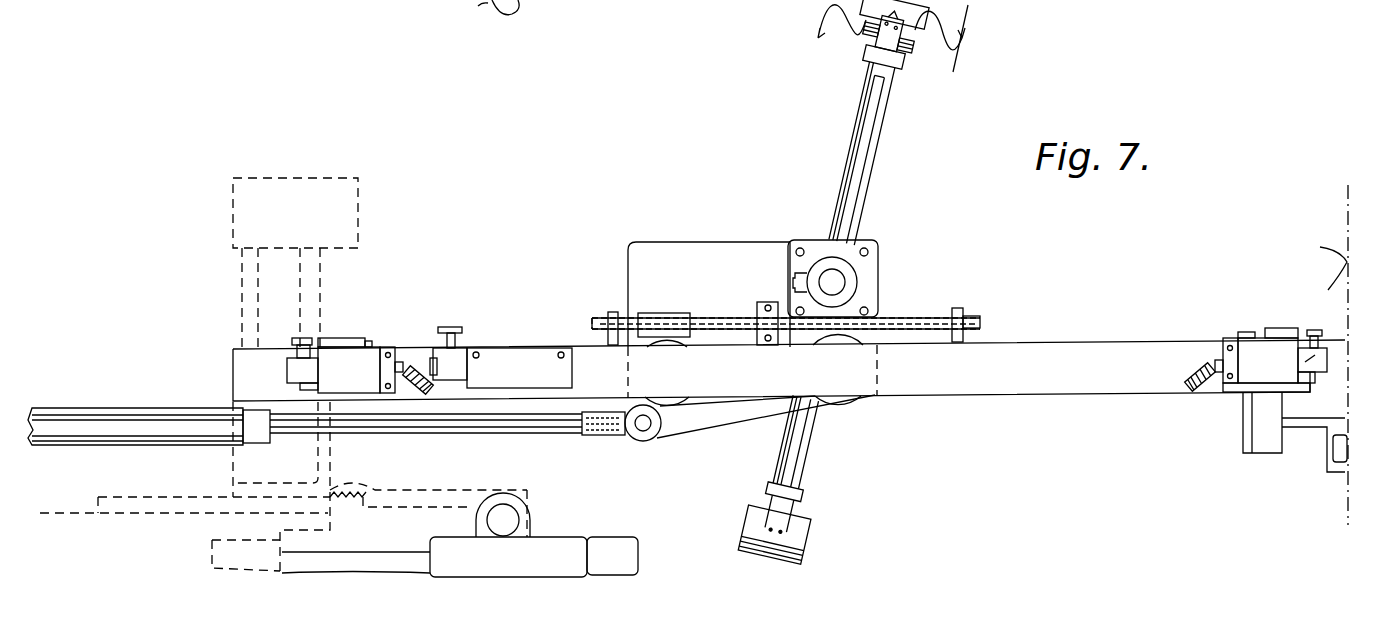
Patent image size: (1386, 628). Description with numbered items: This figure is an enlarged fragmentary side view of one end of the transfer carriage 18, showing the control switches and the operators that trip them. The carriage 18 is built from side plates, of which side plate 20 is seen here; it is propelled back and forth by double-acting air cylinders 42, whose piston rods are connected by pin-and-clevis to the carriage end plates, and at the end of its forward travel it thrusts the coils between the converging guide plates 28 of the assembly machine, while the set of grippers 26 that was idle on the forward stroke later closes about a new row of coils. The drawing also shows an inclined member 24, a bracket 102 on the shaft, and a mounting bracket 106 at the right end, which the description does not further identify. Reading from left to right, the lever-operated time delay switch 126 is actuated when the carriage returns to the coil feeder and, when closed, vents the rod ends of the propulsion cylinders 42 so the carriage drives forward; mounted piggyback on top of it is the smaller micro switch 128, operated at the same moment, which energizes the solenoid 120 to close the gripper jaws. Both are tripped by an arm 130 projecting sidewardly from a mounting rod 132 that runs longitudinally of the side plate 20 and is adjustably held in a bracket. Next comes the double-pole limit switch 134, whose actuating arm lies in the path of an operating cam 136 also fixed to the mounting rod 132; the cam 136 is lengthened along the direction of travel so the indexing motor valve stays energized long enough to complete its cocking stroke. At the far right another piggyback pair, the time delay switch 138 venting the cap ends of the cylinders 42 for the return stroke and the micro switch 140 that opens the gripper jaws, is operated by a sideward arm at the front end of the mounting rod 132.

The carriage 18 is at (753, 258).
The side plate 20 is at (653, 250).
The arm 24 is at (855, 153).
The grippers 26 is at (858, 50).
The converging guide plates 28 is at (1337, 348).
The double-acting air cylinders 42 is at (128, 408).
The bracket 102 is at (960, 308).
The mounting bracket 106 is at (1258, 438).
The solenoid 120 is at (967, 396).
The time delay switch 126 is at (365, 360).
The micro switch 128 is at (337, 346).
The arm 130 is at (613, 312).
The mounting rod 132 is at (737, 320).
The limit switch 134 is at (495, 348).
The operating cam 136 is at (670, 318).
The time delay switch 138 is at (1253, 352).
The micro switch 140 is at (1277, 332).